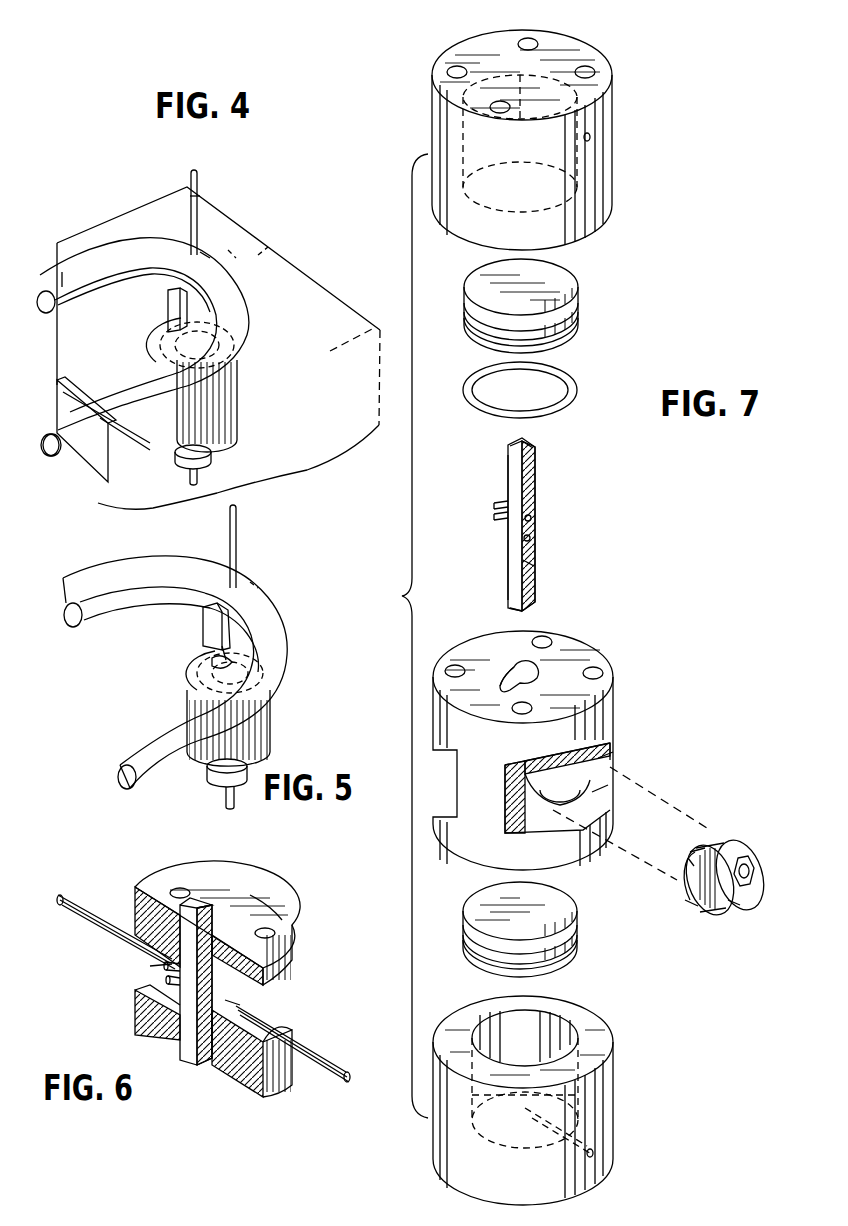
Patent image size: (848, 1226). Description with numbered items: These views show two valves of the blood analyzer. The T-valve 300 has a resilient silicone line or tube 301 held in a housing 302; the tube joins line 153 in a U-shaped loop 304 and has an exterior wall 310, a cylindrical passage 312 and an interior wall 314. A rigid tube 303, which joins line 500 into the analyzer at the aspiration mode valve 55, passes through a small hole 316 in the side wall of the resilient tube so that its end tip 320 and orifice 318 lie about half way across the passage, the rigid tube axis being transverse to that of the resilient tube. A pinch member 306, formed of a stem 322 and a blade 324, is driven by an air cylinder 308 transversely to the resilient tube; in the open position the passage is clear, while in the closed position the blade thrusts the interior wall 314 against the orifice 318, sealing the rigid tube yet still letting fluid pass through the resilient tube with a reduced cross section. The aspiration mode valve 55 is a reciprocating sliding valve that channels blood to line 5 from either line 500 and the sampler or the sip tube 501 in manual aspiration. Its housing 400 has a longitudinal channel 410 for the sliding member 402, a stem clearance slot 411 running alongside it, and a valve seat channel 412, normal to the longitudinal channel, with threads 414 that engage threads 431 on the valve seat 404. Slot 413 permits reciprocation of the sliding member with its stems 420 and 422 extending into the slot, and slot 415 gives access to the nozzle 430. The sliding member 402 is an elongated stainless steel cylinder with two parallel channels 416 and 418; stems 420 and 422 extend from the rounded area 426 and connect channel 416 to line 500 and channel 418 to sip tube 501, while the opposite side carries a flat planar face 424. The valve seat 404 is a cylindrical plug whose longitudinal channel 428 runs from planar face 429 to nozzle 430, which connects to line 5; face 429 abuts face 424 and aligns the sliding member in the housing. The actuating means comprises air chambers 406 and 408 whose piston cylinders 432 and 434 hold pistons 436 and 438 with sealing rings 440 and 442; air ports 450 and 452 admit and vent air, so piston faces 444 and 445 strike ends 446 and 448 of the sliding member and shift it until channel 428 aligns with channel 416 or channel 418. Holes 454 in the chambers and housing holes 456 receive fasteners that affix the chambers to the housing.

In FIG. 4, the T-valve 300 is at (213, 193).
In FIG. 4, the resilient tube 301 is at (97, 258).
In FIG. 4, the housing 302 is at (263, 250).
In FIG. 4, the rigid tube 303 is at (193, 210).
In FIG. 5, the rigid tube 303 is at (236, 550).
In FIG. 4, the U-shaped loop 304 is at (258, 312).
In FIG. 5, the U-shaped loop 304 is at (290, 615).
In FIG. 4, the pinch member 306 is at (145, 305).
In FIG. 5, the pinch member 306 is at (168, 648).
In FIG. 4, the air cylinder 308 is at (243, 418).
In FIG. 5, the exterior wall 310 is at (167, 763).
In FIG. 5, the cylindrical passage 312 is at (118, 777).
In FIG. 5, the interior wall 314 is at (70, 607).
In FIG. 4, the hole 316 is at (202, 253).
In FIG. 4, the orifice 318 is at (230, 252).
In FIG. 5, the end tip 320 is at (253, 580).
In FIG. 5, the stem 322 is at (220, 660).
In FIG. 5, the blade 324 is at (203, 633).
In FIG. 4, the line 153 is at (64, 470).
In FIG. 6, the housing 400 is at (305, 941).
In FIG. 7, the housing 400 is at (615, 677).
In FIG. 6, the sliding member 402 is at (207, 905).
In FIG. 7, the sliding member 402 is at (538, 465).
In FIG. 7, the valve seat 404 is at (753, 842).
In FIG. 7, the activating air chamber 406 is at (605, 203).
In FIG. 7, the activating air chamber 408 is at (615, 1070).
In FIG. 7, the longitudinal channel 410 is at (542, 673).
In FIG. 7, the stem clearance slot 411 is at (500, 686).
In FIG. 7, the valve seat channel 412 is at (607, 762).
In FIG. 7, the threads 414 is at (605, 788).
In FIG. 7, the longitudinal channel 416 is at (530, 504).
In FIG. 7, the longitudinal channel 418 is at (535, 546).
In FIG. 6, the stem 420 is at (160, 943).
In FIG. 7, the stem 420 is at (496, 504).
In FIG. 6, the stem 422 is at (177, 993).
In FIG. 7, the stem 422 is at (495, 517).
In FIG. 7, the flat planar face 424 is at (536, 575).
In FIG. 7, the rounded area 426 is at (508, 463).
In FIG. 6, the longitudinal channel 428 is at (212, 1020).
In FIG. 7, the longitudinal channel 428 is at (727, 902).
In FIG. 7, the planar face 429 is at (696, 825).
In FIG. 7, the nozzle 430 is at (745, 880).
In FIG. 7, the threads 431 is at (686, 870).
In FIG. 7, the piston cylinder 432 is at (607, 178).
In FIG. 7, the piston cylinder 434 is at (573, 1095).
In FIG. 7, the piston 436 is at (577, 297).
In FIG. 7, the piston 438 is at (575, 965).
In FIG. 7, the sealing ring 440 is at (575, 395).
In FIG. 7, the sealing ring 442 is at (573, 940).
In FIG. 7, the piston face 444 is at (573, 343).
In FIG. 7, the piston face 445 is at (555, 900).
In FIG. 7, the end of sliding member 446 is at (525, 446).
In FIG. 7, the end of sliding member 448 is at (510, 605).
In FIG. 7, the air port 450 is at (607, 137).
In FIG. 7, the air port 452 is at (597, 1153).
In FIG. 7, the holes 454 is at (598, 66).
In FIG. 7, the housing holes 456 is at (603, 670).
In FIG. 6, the line 500 is at (63, 896).
In FIG. 6, the sip tube 501 is at (70, 930).
In FIG. 6, the slot 413 is at (135, 974).
In FIG. 6, the slot 415 is at (305, 1021).
In FIG. 6, the line 5 is at (337, 1065).
In FIG. 6, the aspiration mode valve 55 is at (290, 890).